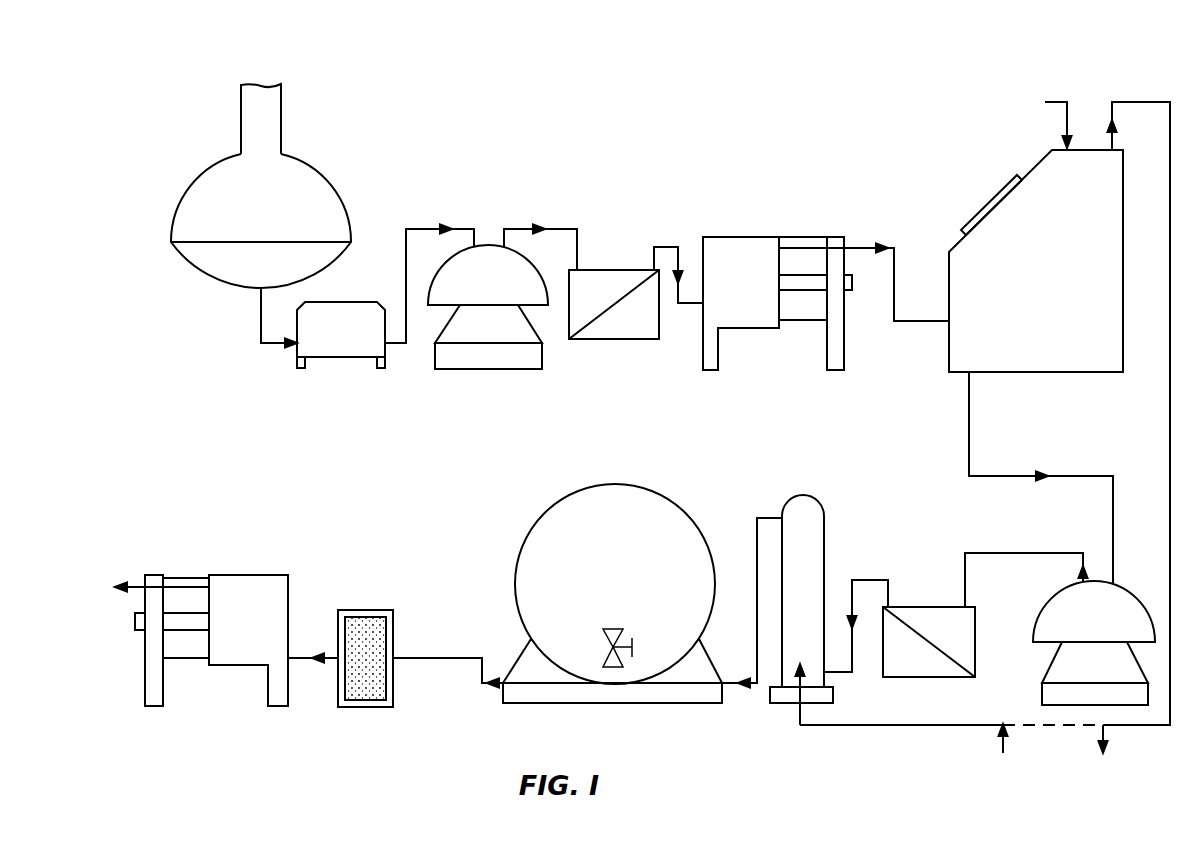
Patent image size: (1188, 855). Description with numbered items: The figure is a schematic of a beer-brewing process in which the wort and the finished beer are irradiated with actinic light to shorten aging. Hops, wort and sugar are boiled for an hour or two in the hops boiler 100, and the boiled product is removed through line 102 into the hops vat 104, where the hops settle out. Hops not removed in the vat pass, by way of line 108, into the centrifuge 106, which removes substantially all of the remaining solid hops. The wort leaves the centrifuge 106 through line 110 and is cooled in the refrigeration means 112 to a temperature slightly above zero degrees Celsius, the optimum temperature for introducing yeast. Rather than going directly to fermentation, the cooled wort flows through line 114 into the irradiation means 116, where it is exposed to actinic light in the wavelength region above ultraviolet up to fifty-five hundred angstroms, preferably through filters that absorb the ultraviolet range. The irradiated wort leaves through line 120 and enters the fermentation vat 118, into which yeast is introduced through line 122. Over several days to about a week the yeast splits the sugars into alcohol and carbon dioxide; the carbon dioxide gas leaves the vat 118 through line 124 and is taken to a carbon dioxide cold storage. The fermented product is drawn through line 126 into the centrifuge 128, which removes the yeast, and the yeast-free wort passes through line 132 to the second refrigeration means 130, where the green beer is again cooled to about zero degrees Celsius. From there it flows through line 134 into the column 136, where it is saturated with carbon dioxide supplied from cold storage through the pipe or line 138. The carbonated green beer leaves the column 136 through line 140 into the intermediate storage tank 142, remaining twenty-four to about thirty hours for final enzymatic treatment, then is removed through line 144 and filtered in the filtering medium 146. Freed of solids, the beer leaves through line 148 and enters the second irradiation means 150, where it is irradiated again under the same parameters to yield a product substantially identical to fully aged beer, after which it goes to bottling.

The hops boiler 100 is at (322, 188).
The line 102 is at (258, 313).
The hops vat 104 is at (343, 352).
The centrifuge 106 is at (514, 360).
The transfer line 108 is at (428, 228).
The line 110 is at (557, 222).
The refrigeration means 112 is at (612, 333).
The line 114 is at (658, 242).
The irradiation means 116 is at (722, 283).
The fermentation vat 118 is at (1014, 283).
The line 120 is at (898, 322).
The line 122 is at (1046, 101).
The line 124 is at (1170, 388).
The line 126 is at (1003, 474).
The centrifuge 128 is at (1072, 618).
The second refrigeration means 130 is at (915, 606).
The line 132 is at (1025, 552).
The line 134 is at (878, 579).
The column 136 is at (822, 515).
The pipe or line 138 is at (870, 726).
The line 140 is at (757, 516).
The intermediate storage tank 142 is at (597, 583).
The line 144 is at (448, 656).
The filtering medium 146 is at (361, 610).
The line 148 is at (302, 664).
The second irradiation means 150 is at (235, 616).